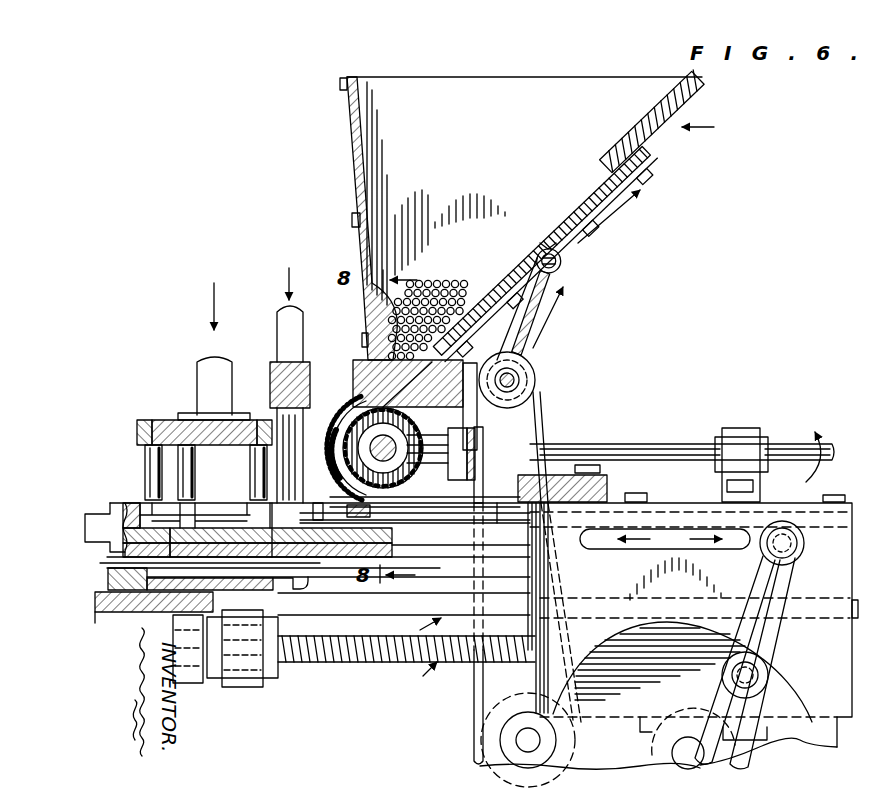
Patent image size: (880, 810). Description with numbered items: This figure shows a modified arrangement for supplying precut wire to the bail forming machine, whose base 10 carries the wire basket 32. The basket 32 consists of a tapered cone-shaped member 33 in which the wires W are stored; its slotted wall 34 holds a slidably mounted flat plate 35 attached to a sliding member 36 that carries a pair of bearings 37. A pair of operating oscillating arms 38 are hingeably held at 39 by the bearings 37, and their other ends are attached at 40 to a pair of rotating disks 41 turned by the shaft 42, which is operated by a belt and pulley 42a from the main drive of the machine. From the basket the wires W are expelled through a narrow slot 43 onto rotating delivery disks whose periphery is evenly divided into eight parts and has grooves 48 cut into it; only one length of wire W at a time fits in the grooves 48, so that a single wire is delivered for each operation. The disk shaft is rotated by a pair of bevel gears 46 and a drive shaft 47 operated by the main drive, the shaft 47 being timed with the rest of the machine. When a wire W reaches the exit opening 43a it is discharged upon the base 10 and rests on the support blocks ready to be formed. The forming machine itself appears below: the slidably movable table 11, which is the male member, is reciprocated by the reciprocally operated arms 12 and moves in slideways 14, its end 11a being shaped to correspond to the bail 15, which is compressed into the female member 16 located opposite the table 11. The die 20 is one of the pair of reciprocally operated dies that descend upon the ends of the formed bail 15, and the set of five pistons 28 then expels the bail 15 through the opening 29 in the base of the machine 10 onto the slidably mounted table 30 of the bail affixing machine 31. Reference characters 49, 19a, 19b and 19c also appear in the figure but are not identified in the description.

The tapered cone-shaped member 33 is at (521, 242).
The basket wall 34 is at (662, 120).
The wire basket 32 is at (705, 114).
The slidably mounted flat plate 35 is at (600, 188).
The sliding member 36 is at (546, 246).
The bearings 37 is at (562, 257).
The hinge connection 39 is at (562, 266).
The operating oscillating arms 38 is at (540, 310).
The attachment point 40 is at (483, 356).
The rotating disks 41 is at (536, 358).
The shaft 42 is at (520, 383).
The belt and pulley 42a is at (462, 717).
The drive shaft 47 is at (556, 455).
The bevel gears 46 is at (412, 476).
The grooves 48 is at (348, 470).
The narrow slot 43 is at (337, 435).
The exit opening 43a is at (322, 517).
The gear hub 49 is at (402, 428).
The reciprocally operated die 20 is at (270, 389).
The pistons 28 is at (250, 473).
The female member 16 is at (127, 506).
The opening 29 is at (140, 547).
The rack bar 19a is at (281, 542).
The bail 15 is at (147, 583).
The bar hook 19b is at (293, 590).
The bar extension 19c is at (343, 590).
The slidably mounted table 30 is at (172, 595).
The bail affixing machine 31 is at (462, 698).
The slideways 14 is at (663, 503).
The base 10 is at (606, 479).
The reciprocally operated arms 12 is at (760, 581).
The end of the table 11a is at (434, 518).
The slidably movable table 11 is at (497, 522).
The wires W is at (470, 285).